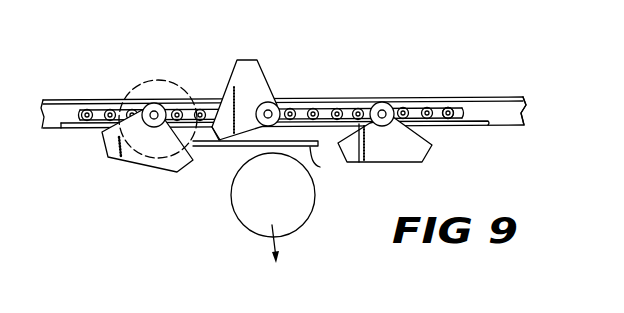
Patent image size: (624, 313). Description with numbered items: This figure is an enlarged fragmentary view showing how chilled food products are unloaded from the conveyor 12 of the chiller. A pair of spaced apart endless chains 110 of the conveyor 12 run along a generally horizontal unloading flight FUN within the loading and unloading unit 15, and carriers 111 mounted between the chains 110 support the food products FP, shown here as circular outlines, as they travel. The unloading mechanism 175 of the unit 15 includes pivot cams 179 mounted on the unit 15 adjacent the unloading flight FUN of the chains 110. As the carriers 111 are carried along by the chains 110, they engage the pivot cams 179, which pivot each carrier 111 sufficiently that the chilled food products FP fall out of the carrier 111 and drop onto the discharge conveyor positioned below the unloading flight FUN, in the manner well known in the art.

The conveyor 12 is at (96, 104).
The loading and unloading unit 15 is at (545, 74).
The endless chains 110 is at (443, 111).
The carriers 111 is at (117, 164).
The unloading mechanism 175 is at (309, 105).
The pivot cams 179 is at (272, 163).
The food products FP is at (174, 80).
The unloading flight FUN is at (461, 111).